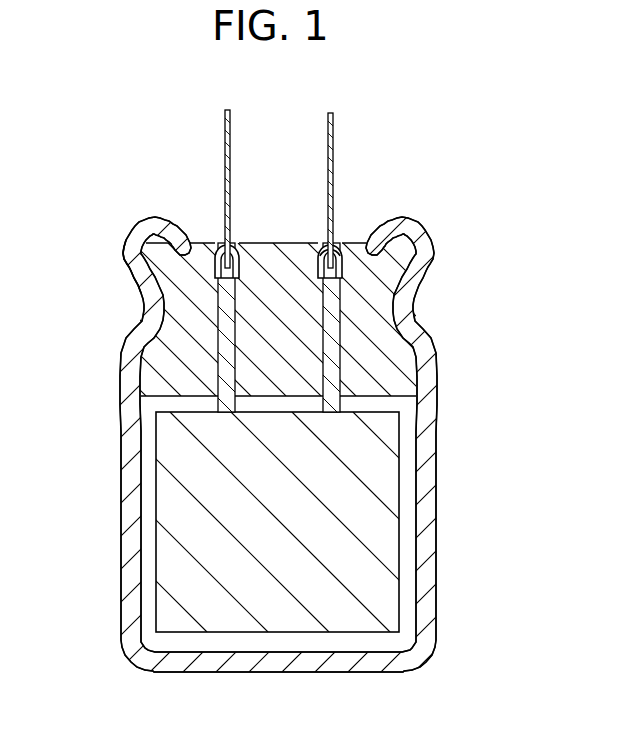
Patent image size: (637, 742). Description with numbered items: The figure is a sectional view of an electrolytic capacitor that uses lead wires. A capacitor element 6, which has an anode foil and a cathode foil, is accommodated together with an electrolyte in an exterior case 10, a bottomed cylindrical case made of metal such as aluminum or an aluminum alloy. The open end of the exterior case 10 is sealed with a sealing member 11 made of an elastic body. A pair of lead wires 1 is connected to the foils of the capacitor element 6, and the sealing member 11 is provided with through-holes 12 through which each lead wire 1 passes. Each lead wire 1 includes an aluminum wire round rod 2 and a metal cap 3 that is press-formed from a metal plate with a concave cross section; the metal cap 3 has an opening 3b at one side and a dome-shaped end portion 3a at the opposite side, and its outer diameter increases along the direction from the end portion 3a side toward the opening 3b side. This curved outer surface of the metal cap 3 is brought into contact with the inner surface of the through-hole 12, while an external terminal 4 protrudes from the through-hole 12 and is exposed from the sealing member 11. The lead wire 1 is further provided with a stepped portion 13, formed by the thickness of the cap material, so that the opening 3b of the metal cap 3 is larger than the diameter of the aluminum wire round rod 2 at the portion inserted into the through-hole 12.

The lead wire 1 is at (228, 112).
The aluminum wire round rod 2 is at (332, 350).
The metal cap 3 is at (343, 266).
The end portion 3a is at (336, 243).
The opening 3b is at (333, 272).
The external terminal 4 is at (334, 155).
The capacitor element 6 is at (385, 529).
The exterior case 10 is at (131, 533).
The sealing member 11 is at (163, 272).
The through-hole 12 is at (223, 255).
The stepped portion 13 is at (213, 278).